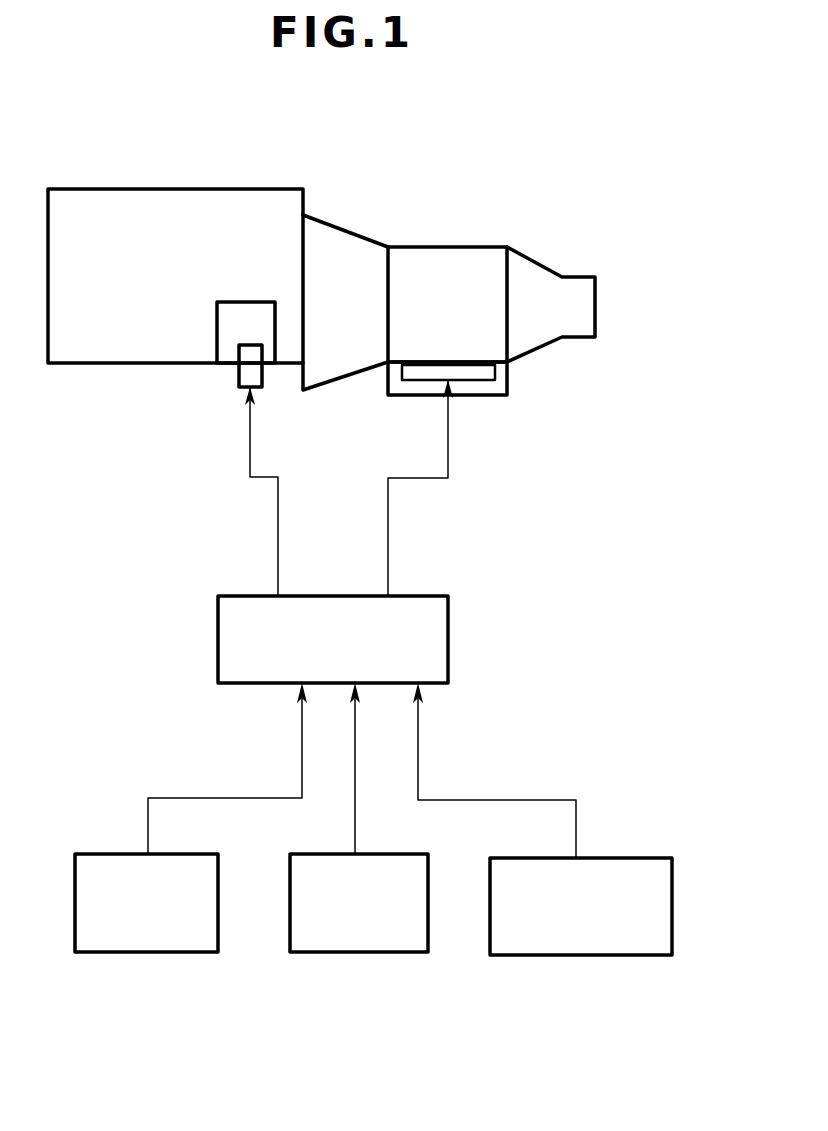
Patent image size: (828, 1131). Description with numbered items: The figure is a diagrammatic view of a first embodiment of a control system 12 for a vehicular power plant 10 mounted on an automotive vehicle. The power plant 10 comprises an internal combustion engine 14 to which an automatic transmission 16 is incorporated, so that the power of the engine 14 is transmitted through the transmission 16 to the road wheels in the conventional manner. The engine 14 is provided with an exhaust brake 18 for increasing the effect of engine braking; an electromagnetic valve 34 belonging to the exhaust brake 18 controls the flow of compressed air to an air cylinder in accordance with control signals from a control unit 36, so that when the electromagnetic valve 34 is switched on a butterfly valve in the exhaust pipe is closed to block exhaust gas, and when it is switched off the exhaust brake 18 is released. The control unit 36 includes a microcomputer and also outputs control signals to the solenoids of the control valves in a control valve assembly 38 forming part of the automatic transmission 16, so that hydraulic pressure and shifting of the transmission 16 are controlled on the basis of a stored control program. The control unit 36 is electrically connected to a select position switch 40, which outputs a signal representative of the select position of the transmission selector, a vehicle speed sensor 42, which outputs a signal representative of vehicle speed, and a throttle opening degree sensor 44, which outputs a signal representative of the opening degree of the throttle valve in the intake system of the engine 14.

The vehicular power plant 10 is at (493, 180).
The control system 12 is at (207, 548).
The internal combustion engine 14 is at (213, 189).
The automatic transmission 16 is at (436, 247).
The exhaust brake 18 is at (217, 336).
The electromagnetic valve 34 is at (238, 375).
The control unit 36 is at (428, 596).
The control valve assembly 38 is at (507, 372).
The select position switch 40 is at (203, 955).
The vehicle speed sensor 42 is at (397, 953).
The throttle opening degree sensor 44 is at (614, 955).